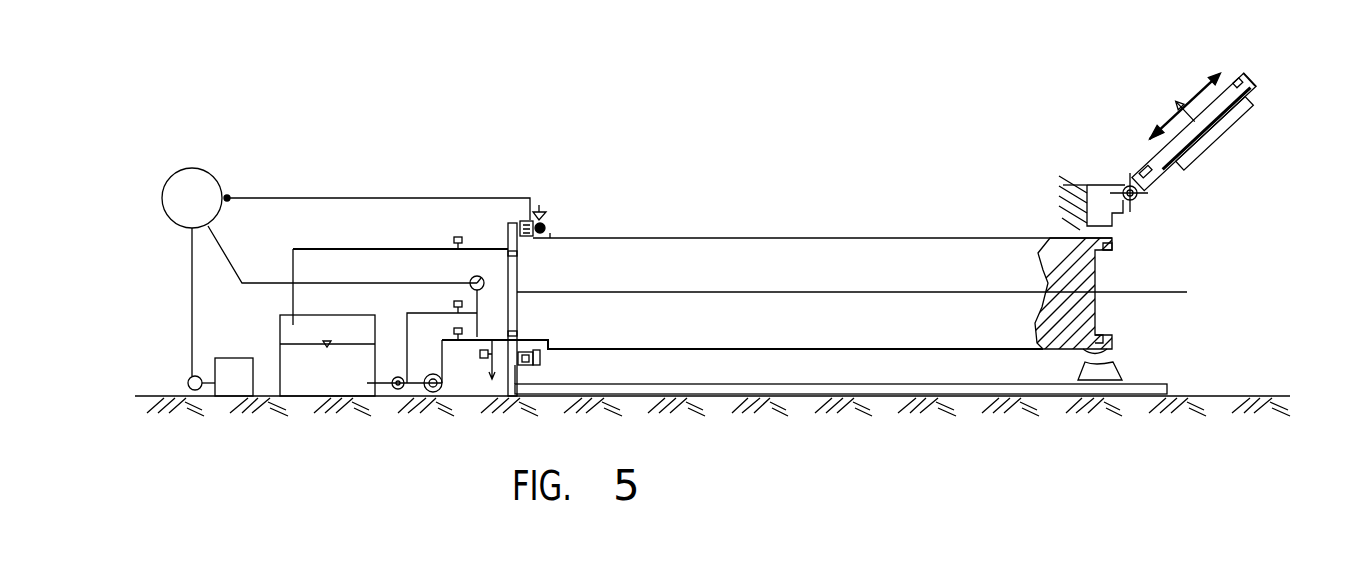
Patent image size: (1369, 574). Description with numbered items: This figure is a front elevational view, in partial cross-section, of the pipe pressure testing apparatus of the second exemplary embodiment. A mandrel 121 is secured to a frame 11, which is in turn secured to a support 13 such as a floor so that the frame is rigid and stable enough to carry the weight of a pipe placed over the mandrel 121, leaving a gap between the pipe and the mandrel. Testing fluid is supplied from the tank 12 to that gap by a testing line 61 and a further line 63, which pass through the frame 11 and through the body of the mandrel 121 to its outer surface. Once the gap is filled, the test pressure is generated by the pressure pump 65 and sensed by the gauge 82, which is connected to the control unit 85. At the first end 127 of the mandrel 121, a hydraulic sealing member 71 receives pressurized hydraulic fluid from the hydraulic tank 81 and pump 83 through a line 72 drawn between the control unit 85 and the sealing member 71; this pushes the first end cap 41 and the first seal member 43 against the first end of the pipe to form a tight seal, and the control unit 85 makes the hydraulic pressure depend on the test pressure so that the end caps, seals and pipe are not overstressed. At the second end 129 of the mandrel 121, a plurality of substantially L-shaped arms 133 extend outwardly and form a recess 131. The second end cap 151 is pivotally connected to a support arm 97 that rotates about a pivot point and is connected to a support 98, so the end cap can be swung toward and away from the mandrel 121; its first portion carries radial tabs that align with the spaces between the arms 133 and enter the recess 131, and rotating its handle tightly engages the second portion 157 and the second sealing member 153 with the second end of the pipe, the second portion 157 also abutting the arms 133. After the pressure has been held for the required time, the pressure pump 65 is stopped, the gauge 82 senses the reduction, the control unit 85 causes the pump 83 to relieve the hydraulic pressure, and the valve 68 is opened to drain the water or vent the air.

The frame 11 is at (933, 386).
The tank 12 is at (305, 380).
The support 13 is at (145, 396).
The first end cap 41 is at (537, 222).
The first seal member 43 is at (538, 213).
The testing line 61 is at (483, 247).
The line 63 is at (527, 337).
The pressure pump 65 is at (397, 388).
The valve 68 is at (483, 360).
The hydraulic sealing member 71 is at (530, 223).
The air line 72 is at (320, 193).
The hydraulic tank 81 is at (255, 378).
The gauge 82 is at (477, 283).
The pump 83 is at (195, 377).
The control unit 85 is at (227, 198).
The support arm 97 is at (1085, 185).
The support 98 is at (1100, 180).
The mandrel 121 is at (765, 238).
The first end of the mandrel 127 is at (540, 367).
The second end of the mandrel 129 is at (1112, 349).
The recess 131 is at (1097, 250).
The L-shaped arms 133 is at (1112, 243).
The second end cap 151 is at (1153, 157).
The second sealing member 153 is at (1241, 130).
The second portion 157 is at (1256, 91).